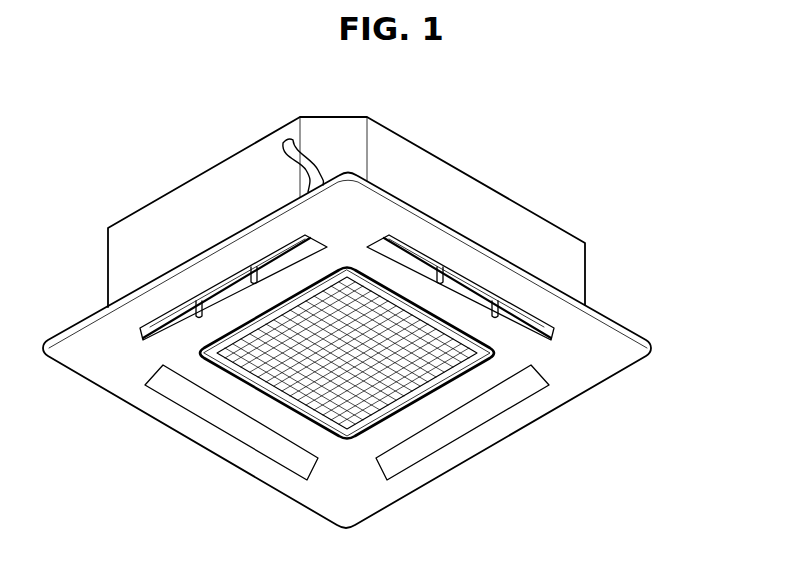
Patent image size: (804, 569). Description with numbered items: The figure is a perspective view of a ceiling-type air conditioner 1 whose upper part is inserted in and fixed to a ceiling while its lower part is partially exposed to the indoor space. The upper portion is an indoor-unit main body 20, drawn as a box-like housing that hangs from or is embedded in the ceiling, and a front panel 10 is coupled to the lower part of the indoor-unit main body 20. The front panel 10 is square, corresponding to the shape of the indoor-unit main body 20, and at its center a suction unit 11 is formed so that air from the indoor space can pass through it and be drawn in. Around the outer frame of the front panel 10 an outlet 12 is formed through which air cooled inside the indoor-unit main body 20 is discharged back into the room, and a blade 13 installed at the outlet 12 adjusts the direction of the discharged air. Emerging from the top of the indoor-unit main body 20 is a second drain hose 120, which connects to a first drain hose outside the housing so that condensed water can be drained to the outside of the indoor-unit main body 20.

The ceiling-type air conditioner 1 is at (672, 161).
The front panel 10 is at (612, 365).
The suction unit 11 is at (293, 378).
The outlet 12 is at (173, 317).
The blade 13 is at (468, 423).
The indoor-unit main body 20 is at (472, 192).
The second drain hose 120 is at (285, 163).